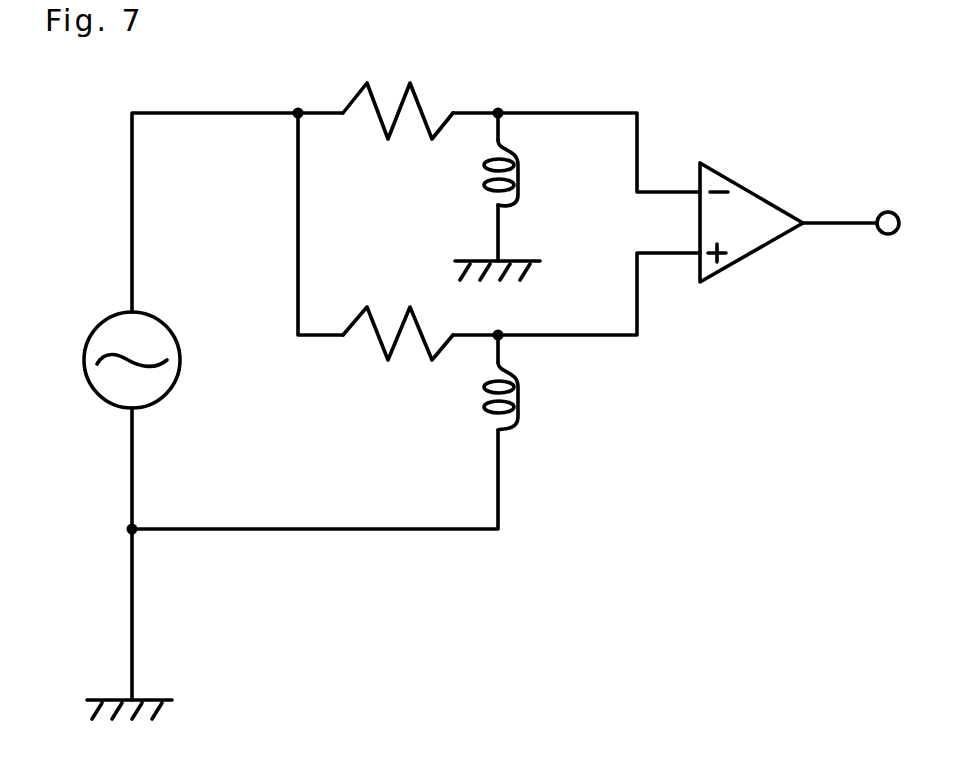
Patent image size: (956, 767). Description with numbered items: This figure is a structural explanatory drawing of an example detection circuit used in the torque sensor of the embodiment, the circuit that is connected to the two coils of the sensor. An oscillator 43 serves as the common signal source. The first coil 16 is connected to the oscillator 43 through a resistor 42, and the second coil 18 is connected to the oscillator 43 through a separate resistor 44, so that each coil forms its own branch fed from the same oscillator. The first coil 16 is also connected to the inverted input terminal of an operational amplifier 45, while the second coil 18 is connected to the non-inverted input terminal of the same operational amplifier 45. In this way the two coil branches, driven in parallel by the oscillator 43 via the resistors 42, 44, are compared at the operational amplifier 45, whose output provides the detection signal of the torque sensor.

The resistor 42 is at (423, 107).
The resistor 44 is at (378, 338).
The first coil 16 is at (488, 183).
The second coil 18 is at (488, 412).
The oscillator 43 is at (113, 333).
The operational amplifier 45 is at (755, 235).